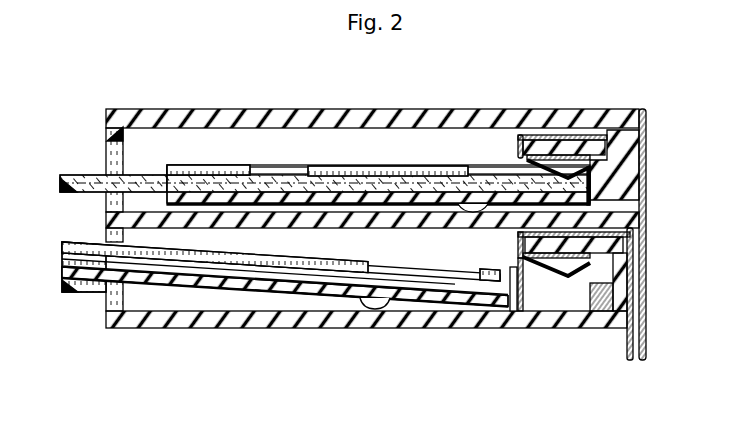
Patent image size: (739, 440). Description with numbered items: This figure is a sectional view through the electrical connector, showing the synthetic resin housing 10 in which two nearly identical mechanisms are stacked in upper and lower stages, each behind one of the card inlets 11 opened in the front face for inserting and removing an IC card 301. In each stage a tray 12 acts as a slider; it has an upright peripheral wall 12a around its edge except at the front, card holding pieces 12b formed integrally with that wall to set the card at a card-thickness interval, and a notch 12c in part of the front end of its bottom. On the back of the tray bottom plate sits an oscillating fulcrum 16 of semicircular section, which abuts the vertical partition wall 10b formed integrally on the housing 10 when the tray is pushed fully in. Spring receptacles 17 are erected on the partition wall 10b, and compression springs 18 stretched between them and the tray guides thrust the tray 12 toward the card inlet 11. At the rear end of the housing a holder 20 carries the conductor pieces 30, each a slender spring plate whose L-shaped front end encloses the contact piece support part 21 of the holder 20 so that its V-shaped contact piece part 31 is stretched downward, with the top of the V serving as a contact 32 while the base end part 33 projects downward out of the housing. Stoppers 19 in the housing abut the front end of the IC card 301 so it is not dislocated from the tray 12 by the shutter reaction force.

The housing 10 is at (327, 188).
The vertical partition wall 10b is at (157, 213).
The card inlet 11 is at (110, 150).
The tray 12 is at (305, 127).
The peripheral wall 12a is at (198, 168).
The card holding piece 12b is at (363, 170).
The notch 12c is at (239, 197).
The oscillating fulcrum 16 is at (472, 212).
The spring receptacle 17 is at (527, 256).
The compression spring 18 is at (515, 293).
The stopper 19 is at (63, 182).
The holder 20 is at (643, 153).
The contact piece support part 21 is at (567, 150).
The conductor piece 30 is at (607, 137).
The contact piece part 31 is at (583, 186).
The contact 32 is at (630, 155).
The base end part 33 is at (636, 362).
The IC card 301 is at (90, 173).